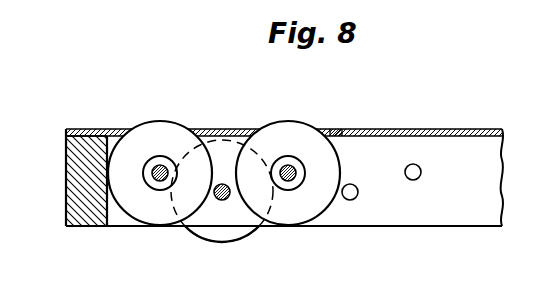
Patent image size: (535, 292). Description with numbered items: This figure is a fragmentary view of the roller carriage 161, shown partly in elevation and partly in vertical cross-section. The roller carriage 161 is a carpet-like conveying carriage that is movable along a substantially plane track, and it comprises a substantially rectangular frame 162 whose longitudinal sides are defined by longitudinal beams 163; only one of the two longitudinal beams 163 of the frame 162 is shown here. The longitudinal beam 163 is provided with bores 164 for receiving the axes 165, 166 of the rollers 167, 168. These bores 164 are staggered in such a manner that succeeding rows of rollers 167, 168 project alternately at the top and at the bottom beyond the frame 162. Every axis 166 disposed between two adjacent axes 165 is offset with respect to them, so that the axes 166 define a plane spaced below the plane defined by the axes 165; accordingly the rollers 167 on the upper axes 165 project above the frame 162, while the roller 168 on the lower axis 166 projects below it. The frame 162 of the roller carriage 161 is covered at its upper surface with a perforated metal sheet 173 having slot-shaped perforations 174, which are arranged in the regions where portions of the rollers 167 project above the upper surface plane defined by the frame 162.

The roller carriage 161 is at (53, 201).
The frame 162 is at (72, 170).
The longitudinal beam 163 is at (440, 210).
The bore 164 is at (355, 185).
The axis 165 is at (151, 181).
The axis 166 is at (229, 199).
The roller 167 is at (162, 129).
The roller 168 is at (220, 236).
The perforated metal sheet 173 is at (474, 129).
The slot-shaped perforation 174 is at (328, 128).